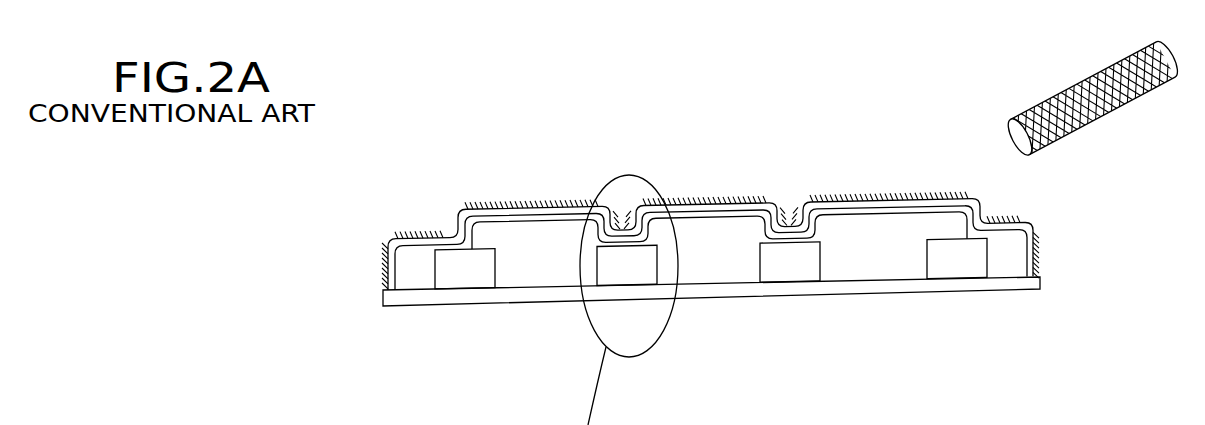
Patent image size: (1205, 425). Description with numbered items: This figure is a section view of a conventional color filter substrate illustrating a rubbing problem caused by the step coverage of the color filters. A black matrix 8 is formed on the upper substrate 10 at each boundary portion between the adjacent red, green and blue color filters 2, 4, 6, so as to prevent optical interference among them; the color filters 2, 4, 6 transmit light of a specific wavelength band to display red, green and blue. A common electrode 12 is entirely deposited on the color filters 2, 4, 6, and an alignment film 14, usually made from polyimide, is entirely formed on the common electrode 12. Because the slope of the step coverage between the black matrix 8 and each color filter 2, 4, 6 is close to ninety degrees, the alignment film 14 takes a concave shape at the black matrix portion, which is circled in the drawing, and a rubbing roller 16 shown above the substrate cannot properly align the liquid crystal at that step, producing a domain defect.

The red color filter 2 is at (543, 286).
The green color filter 4 is at (708, 286).
The blue color filter 6 is at (875, 273).
The black matrix 8 is at (467, 286).
The upper substrate 10 is at (1040, 281).
The common electrode 12 is at (941, 207).
The alignment film 14 is at (917, 200).
The getter/desiccant rod 16 is at (1078, 85).